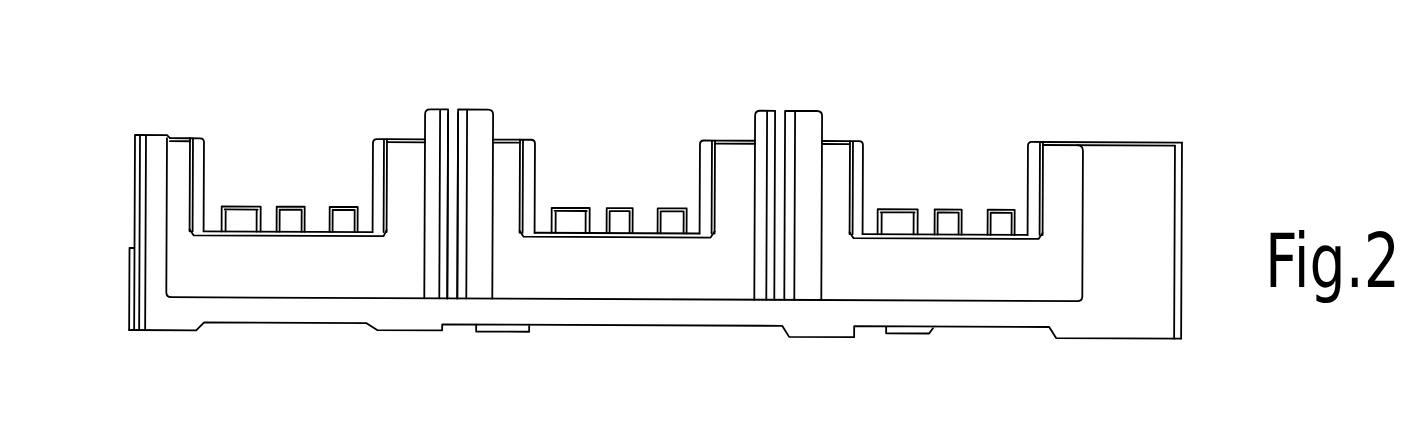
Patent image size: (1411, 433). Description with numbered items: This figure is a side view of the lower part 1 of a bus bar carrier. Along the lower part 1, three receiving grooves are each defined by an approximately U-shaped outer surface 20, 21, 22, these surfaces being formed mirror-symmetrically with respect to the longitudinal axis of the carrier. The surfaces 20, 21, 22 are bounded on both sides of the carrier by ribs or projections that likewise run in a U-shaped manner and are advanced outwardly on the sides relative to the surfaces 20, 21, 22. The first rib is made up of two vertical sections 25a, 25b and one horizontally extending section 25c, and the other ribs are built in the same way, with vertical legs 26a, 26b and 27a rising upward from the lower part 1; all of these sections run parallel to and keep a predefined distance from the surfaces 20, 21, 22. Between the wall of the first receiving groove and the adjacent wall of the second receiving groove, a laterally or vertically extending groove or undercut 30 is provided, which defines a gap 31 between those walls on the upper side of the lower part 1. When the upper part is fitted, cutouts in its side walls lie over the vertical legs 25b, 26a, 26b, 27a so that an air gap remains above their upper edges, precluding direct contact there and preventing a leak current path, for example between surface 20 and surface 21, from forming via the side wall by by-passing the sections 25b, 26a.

The lower part 1 is at (1221, 110).
The outer surface 20 is at (309, 285).
The outer surface 21 is at (640, 288).
The outer surface 22 is at (965, 290).
The vertical section 25a is at (157, 226).
The vertical section 25b is at (432, 233).
The horizontally extending section 25c is at (267, 310).
The vertical leg 26a is at (482, 253).
The vertical leg 26b is at (758, 235).
The vertical leg 27a is at (807, 240).
The groove or undercut 30 is at (457, 205).
The gap 31 is at (452, 122).